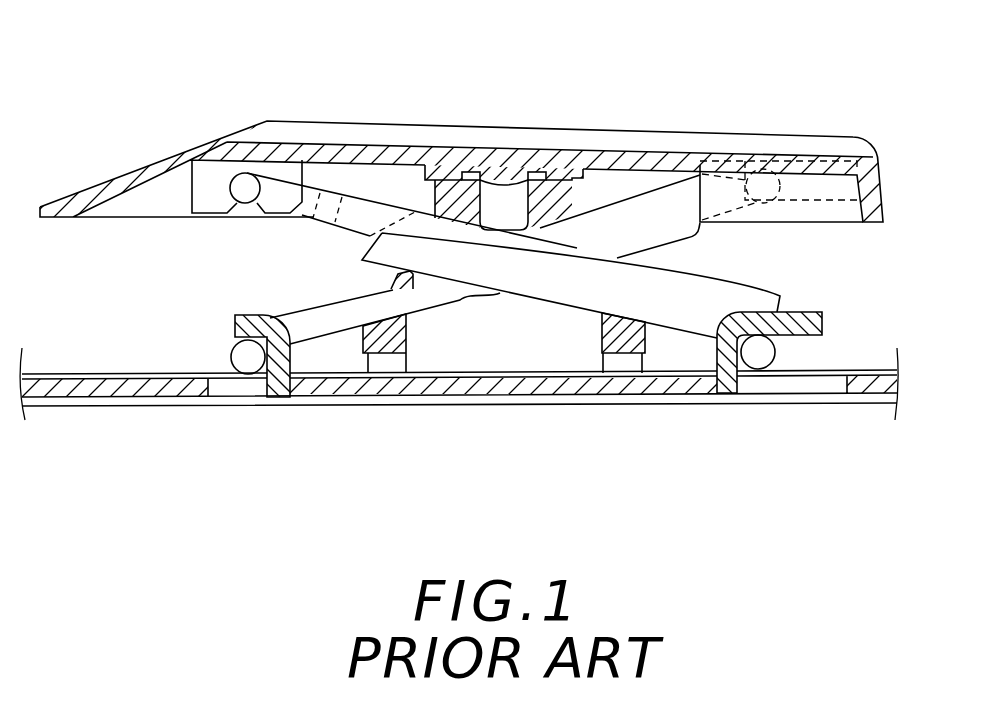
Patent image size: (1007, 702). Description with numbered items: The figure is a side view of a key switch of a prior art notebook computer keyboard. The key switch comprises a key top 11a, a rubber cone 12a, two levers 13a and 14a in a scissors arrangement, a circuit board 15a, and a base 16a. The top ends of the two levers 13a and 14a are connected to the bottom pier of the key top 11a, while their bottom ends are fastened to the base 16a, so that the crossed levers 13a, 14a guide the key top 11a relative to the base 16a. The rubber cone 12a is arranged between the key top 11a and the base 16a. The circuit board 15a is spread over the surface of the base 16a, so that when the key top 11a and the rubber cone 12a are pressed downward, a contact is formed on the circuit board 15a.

The key top 11a is at (500, 138).
The rubber cone 12a is at (573, 195).
The lever 13a is at (365, 235).
The lever 14a is at (648, 208).
The circuit board 15a is at (540, 373).
The base 16a is at (347, 387).